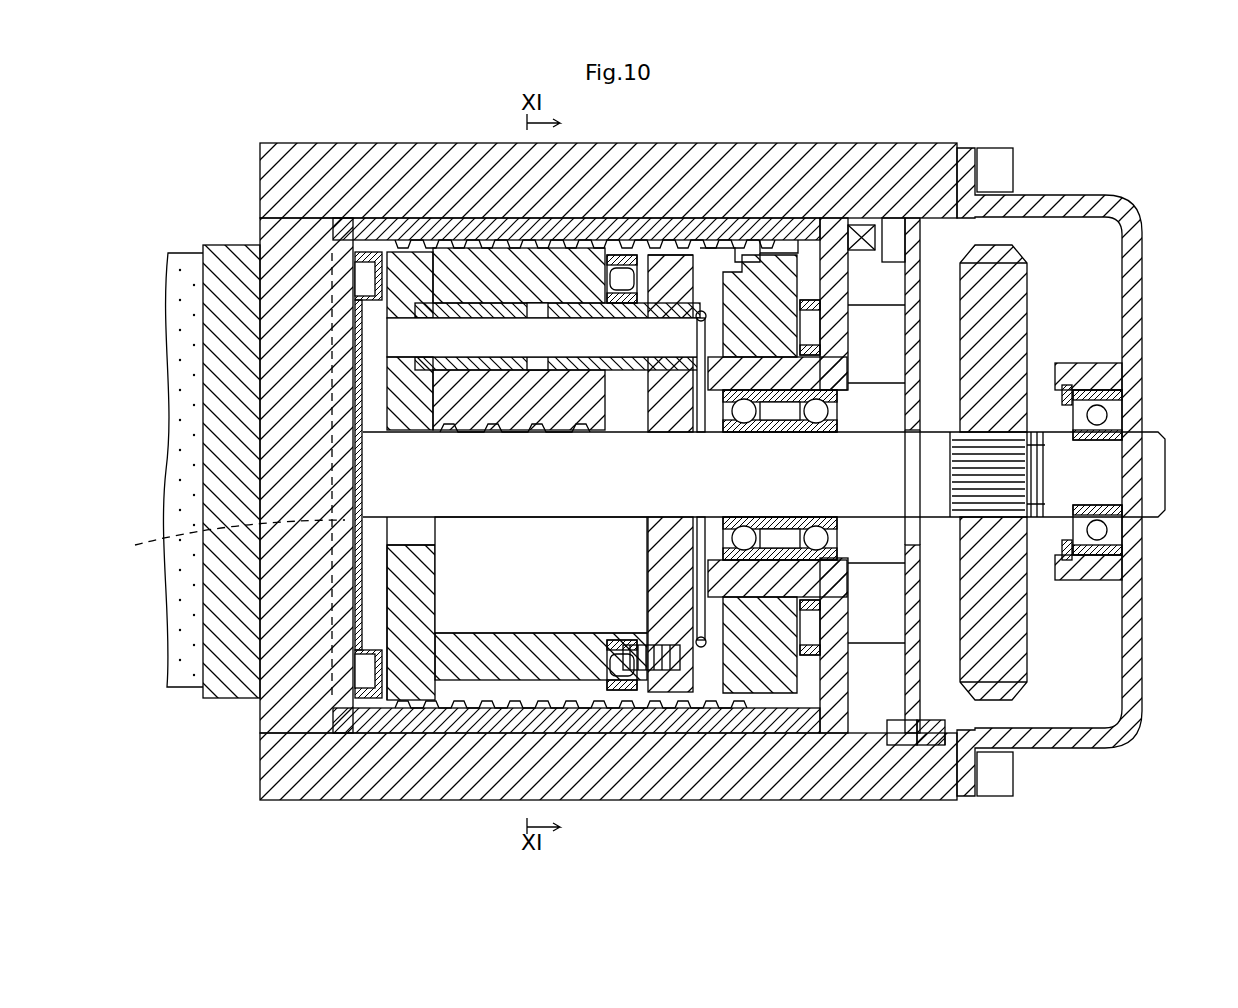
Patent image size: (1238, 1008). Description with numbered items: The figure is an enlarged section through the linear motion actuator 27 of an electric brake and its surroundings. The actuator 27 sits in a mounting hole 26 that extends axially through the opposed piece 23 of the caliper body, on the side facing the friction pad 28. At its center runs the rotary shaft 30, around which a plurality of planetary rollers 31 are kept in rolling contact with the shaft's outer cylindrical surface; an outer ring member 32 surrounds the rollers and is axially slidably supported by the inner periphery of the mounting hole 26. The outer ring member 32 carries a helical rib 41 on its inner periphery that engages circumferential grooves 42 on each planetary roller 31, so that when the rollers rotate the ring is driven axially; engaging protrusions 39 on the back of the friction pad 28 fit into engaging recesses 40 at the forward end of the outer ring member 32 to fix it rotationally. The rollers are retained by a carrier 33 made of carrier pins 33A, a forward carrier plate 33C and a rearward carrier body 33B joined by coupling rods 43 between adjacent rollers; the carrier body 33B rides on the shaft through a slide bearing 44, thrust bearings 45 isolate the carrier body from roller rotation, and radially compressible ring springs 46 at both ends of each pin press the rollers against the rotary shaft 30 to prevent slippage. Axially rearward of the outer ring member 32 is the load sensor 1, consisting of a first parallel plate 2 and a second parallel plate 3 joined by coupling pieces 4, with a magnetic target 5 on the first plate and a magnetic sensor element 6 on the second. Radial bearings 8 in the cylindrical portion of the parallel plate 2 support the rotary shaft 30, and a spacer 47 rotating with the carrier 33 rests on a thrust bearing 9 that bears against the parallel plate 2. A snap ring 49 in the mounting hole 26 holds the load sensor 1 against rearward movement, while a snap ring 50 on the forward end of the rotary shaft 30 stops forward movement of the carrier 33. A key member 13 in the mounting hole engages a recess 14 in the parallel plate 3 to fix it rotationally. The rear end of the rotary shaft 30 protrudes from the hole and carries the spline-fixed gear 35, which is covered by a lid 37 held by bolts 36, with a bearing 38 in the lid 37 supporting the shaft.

The load sensor 1 is at (935, 320).
The parallel plate 2 is at (826, 262).
The parallel plate 3 is at (908, 245).
The coupling pieces 4 is at (865, 240).
The magnetic target 5 is at (862, 320).
The magnetic sensor element 6 is at (895, 235).
The radial bearings 8 is at (815, 424).
The thrust bearing 9 is at (808, 320).
The key member 13 is at (893, 748).
The recess 14 is at (920, 748).
The opposed piece 23 is at (290, 796).
The mounting hole 26 is at (375, 722).
The linear motion actuator 27 is at (360, 204).
The friction pad 28 is at (183, 268).
The rotary shaft 30 is at (1168, 472).
The planetary rollers 31 is at (556, 258).
The outer ring member 32 is at (432, 722).
The carrier 33 is at (680, 300).
The carrier pins 33A is at (490, 330).
The carrier body 33B is at (665, 250).
The carrier plate 33C is at (415, 258).
The gear 35 is at (1010, 615).
The bolts 36 is at (1000, 170).
The lid 37 is at (1144, 668).
The bearing 38 is at (1100, 415).
The engaging protrusions 39 is at (702, 400).
The engaging recesses 40 is at (221, 538).
The helical rib 41 is at (490, 706).
The circumferential grooves 42 is at (480, 432).
The coupling rods 43 is at (540, 640).
The slide bearing 44 is at (672, 432).
The thrust bearings 45 is at (626, 420).
The radially compressible ring springs 46 is at (422, 400).
The spacer 47 is at (737, 260).
The snap ring 49 is at (960, 760).
The snap ring 50 is at (360, 425).